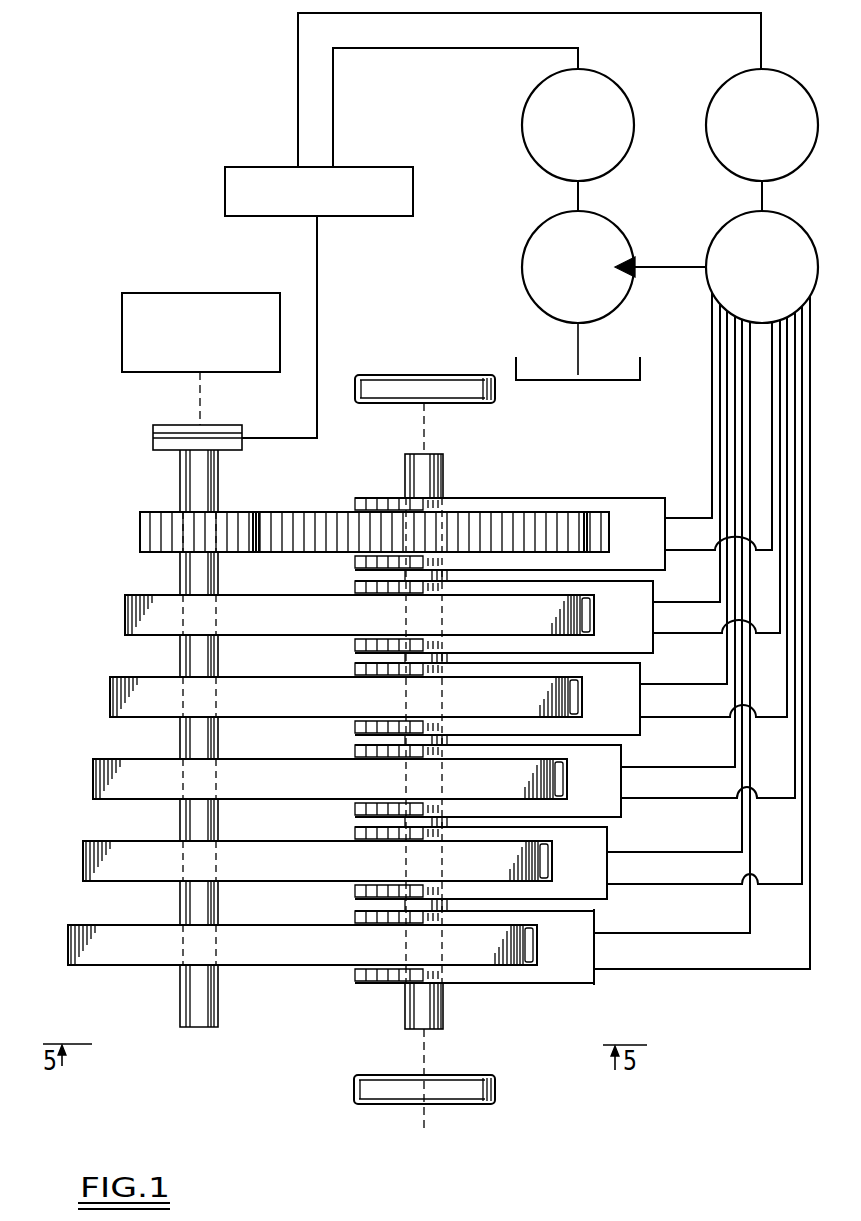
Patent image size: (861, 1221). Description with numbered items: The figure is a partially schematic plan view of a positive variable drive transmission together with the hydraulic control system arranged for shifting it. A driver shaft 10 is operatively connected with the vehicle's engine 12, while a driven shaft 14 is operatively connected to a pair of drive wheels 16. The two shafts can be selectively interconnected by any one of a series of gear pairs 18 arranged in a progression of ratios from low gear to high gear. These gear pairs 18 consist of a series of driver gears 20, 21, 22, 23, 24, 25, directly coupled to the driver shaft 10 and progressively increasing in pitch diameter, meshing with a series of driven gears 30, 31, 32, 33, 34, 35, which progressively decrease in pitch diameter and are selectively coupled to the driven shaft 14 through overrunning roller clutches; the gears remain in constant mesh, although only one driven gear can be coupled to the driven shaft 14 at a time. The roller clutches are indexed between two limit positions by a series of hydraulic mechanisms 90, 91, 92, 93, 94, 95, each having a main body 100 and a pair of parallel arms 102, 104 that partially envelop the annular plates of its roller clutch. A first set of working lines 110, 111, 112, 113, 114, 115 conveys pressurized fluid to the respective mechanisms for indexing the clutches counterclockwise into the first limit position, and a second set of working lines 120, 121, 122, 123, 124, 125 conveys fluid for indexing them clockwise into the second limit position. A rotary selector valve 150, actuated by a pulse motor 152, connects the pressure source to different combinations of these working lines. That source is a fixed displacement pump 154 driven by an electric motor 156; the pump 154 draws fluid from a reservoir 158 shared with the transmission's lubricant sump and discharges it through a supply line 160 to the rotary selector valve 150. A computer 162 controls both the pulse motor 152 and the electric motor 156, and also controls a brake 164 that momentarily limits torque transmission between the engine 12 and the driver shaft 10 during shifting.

The driver shaft 10 is at (205, 479).
The engine 12 is at (158, 293).
The driven shaft 14 is at (430, 477).
The drive wheels 16 is at (472, 378).
The gear pairs 18 is at (315, 971).
The driver gear 20 is at (140, 523).
The driver gear 21 is at (125, 614).
The driver gear 22 is at (110, 696).
The driver gear 23 is at (93, 778).
The driver gear 24 is at (83, 862).
The driver gear 25 is at (68, 947).
The driven gear 30 is at (342, 549).
The driven gear 31 is at (393, 631).
The driven gear 32 is at (393, 713).
The driven gear 33 is at (393, 795).
The driven gear 34 is at (393, 877).
The driven gear 35 is at (393, 960).
The hydraulic mechanism 90 is at (636, 566).
The hydraulic mechanism 91 is at (617, 649).
The hydraulic mechanism 92 is at (602, 733).
The hydraulic mechanism 93 is at (591, 811).
The hydraulic mechanism 94 is at (576, 896).
The hydraulic mechanism 95 is at (561, 979).
The main body 100 is at (594, 975).
The arm 102 is at (508, 922).
The arm 104 is at (510, 985).
The working line 110 is at (700, 482).
The working line 111 is at (700, 580).
The working line 112 is at (700, 668).
The working line 113 is at (700, 750).
The working line 114 is at (700, 852).
The working line 115 is at (708, 933).
The working line 120 is at (680, 537).
The working line 121 is at (678, 620).
The working line 122 is at (678, 703).
The working line 123 is at (678, 784).
The working line 124 is at (678, 870).
The working line 125 is at (676, 969).
The rotary selector valve 150 is at (722, 228).
The pulse motor 152 is at (717, 93).
The fixed displacement pump 154 is at (530, 238).
The electric motor 156 is at (539, 86).
The reservoir 158 is at (540, 333).
The supply line 160 is at (680, 266).
The computer 162 is at (383, 167).
The brake 164 is at (153, 440).